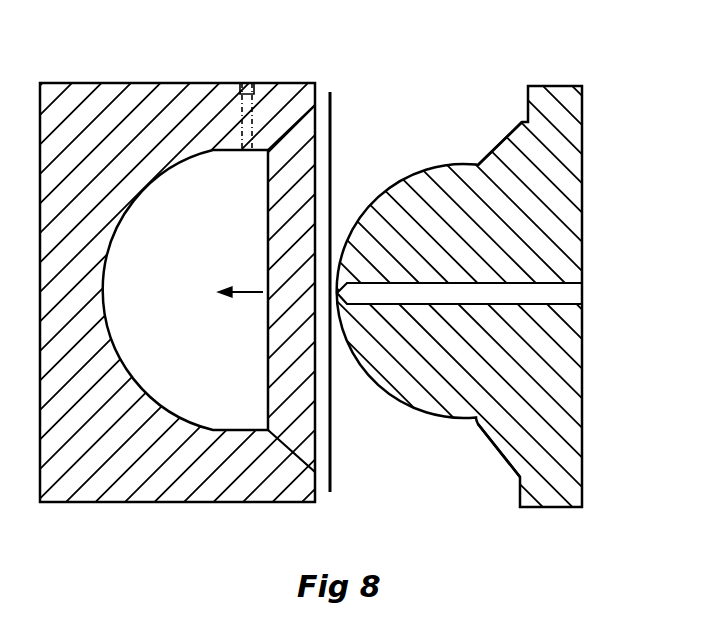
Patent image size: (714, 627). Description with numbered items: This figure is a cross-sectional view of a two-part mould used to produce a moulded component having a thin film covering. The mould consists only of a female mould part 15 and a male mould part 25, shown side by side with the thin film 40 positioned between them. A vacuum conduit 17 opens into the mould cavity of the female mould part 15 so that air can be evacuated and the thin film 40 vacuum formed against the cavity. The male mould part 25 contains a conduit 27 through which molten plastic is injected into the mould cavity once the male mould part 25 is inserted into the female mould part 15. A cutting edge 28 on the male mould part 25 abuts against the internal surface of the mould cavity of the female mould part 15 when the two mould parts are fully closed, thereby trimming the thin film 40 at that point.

The female mould part 15 is at (127, 113).
The vacuum conduit 17 is at (247, 86).
The male mould part 25 is at (565, 92).
The conduit 27 is at (563, 298).
The cutting edge 28 is at (478, 165).
The thin film 40 is at (331, 190).